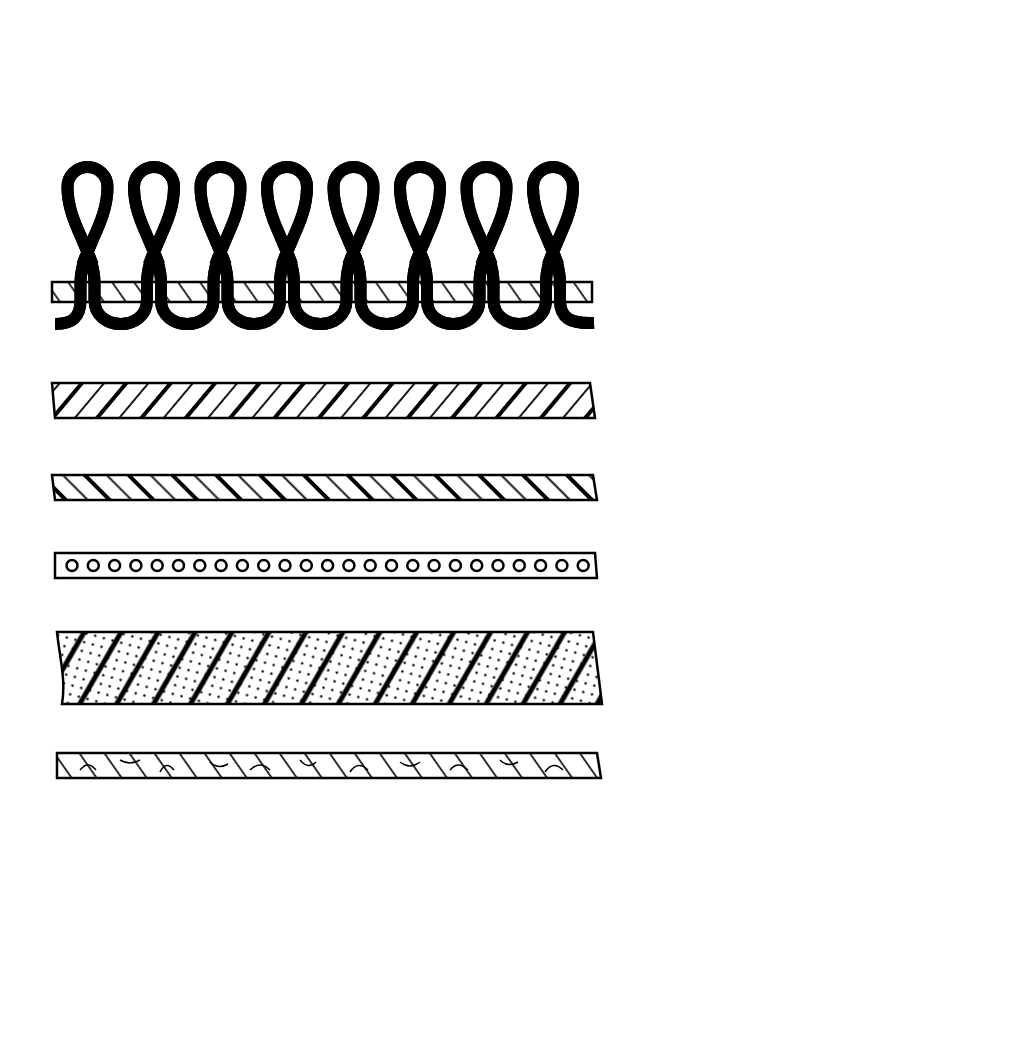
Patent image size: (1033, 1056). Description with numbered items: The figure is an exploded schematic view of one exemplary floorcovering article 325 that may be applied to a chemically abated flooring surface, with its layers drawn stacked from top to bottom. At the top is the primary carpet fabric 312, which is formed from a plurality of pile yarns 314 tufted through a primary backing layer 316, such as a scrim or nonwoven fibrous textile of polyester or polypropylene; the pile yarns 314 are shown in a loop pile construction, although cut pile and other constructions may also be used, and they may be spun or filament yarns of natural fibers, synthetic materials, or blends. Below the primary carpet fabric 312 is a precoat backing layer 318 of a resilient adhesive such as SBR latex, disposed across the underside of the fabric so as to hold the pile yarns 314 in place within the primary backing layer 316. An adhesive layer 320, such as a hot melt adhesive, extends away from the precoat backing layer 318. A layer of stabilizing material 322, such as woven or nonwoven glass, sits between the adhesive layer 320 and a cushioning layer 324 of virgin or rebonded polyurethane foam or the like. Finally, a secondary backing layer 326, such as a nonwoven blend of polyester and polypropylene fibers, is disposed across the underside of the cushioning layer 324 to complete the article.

The floorcovering article 325 is at (613, 120).
The primary carpet fabric 312 is at (672, 163).
The pile yarns 314 is at (151, 161).
The primary backing layer 316 is at (568, 278).
The precoat backing layer 318 is at (568, 383).
The adhesive layer 320 is at (590, 477).
The layer of stabilizing material 322 is at (590, 553).
The cushioning layer 324 is at (590, 630).
The secondary backing layer 326 is at (590, 753).